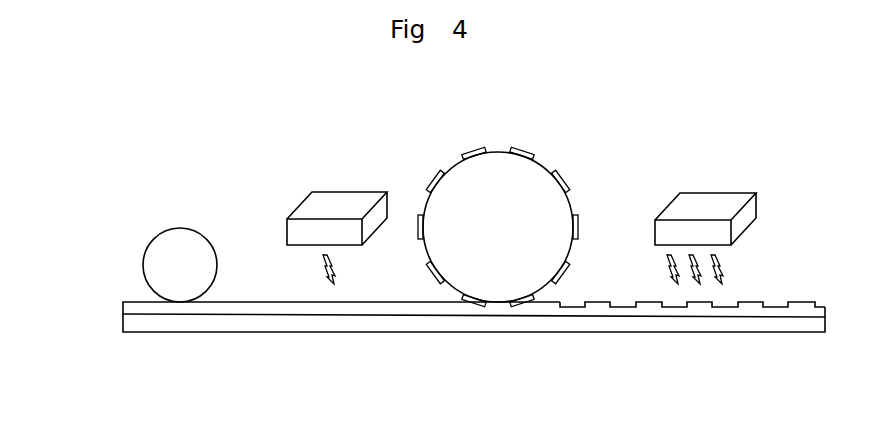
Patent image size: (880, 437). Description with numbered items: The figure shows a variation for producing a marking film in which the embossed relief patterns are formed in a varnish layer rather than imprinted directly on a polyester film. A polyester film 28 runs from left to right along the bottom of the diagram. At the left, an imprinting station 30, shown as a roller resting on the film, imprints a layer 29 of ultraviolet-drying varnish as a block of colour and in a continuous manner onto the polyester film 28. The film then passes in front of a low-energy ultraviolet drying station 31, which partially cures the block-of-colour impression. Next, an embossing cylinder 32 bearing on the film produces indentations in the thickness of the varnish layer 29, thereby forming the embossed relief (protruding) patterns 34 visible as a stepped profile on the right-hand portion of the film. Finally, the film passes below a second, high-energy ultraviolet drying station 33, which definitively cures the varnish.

The polyester film 28 is at (137, 325).
The layer of ultraviolet-drying varnish 29 is at (137, 306).
The imprinting station 30 is at (175, 248).
The low-energy ultraviolet drying station 31 is at (312, 225).
The embossing cylinder 32 is at (467, 183).
The second, high-energy ultraviolet drying station 33 is at (687, 227).
The embossed relief patterns 34 is at (745, 305).